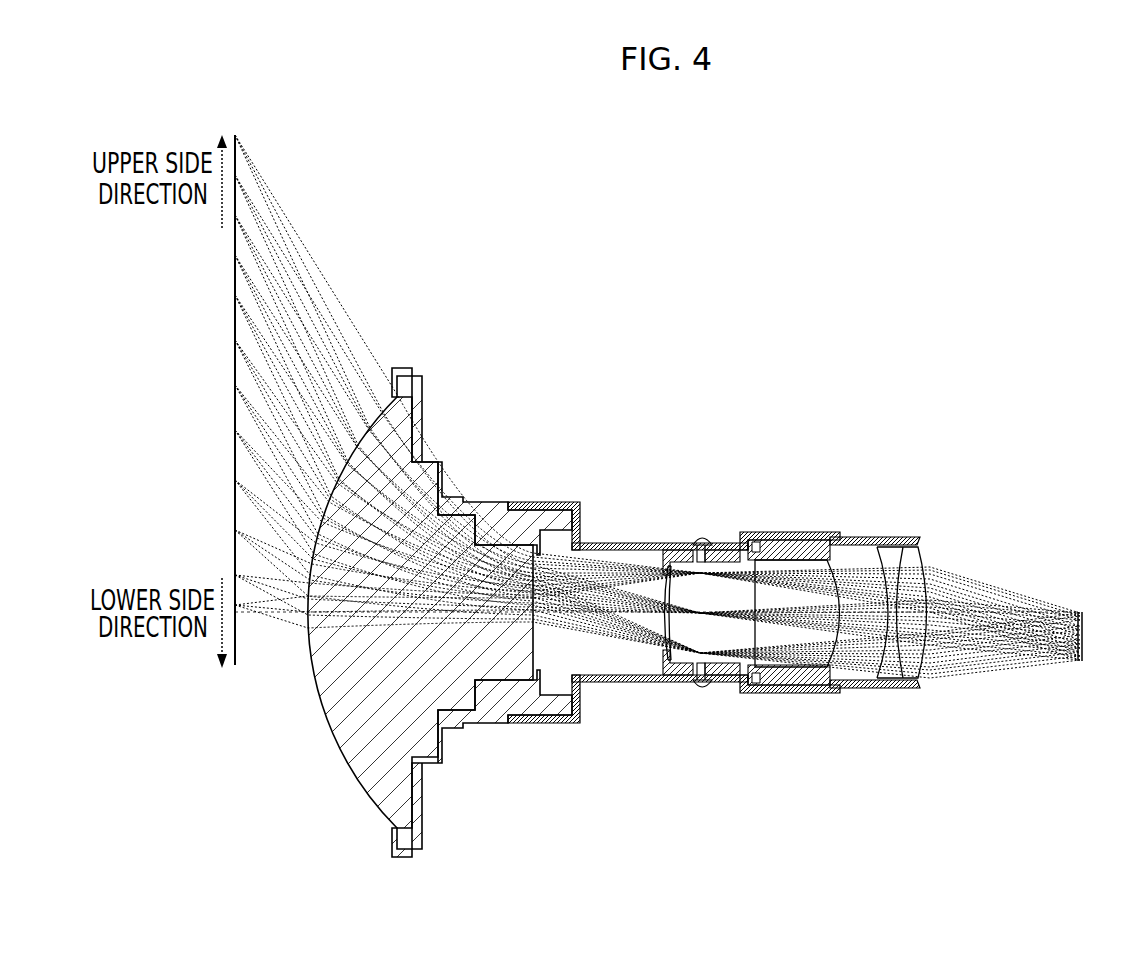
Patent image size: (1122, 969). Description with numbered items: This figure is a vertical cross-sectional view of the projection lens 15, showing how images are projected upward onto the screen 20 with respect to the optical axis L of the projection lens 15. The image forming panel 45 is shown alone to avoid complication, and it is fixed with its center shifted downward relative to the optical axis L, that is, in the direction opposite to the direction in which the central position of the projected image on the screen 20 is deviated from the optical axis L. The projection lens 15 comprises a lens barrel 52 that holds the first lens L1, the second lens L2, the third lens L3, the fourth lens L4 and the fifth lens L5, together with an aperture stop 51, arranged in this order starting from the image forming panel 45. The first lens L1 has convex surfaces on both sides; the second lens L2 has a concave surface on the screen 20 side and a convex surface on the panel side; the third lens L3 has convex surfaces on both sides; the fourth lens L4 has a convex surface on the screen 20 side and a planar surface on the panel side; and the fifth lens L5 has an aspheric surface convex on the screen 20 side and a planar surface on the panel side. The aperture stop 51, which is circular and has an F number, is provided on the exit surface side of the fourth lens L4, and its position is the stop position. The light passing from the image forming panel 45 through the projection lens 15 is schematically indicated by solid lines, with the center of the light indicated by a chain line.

The projection lens 15 is at (760, 415).
The screen 20 is at (233, 553).
The image forming panel 45 is at (1084, 608).
The aperture stop 51 is at (658, 568).
The lens barrel 52 is at (783, 529).
The optical axis L is at (257, 613).
The first lens L1 is at (930, 682).
The second lens L2 is at (855, 695).
The third lens L3 is at (812, 688).
The fourth lens L4 is at (722, 690).
The fifth lens L5 is at (508, 657).